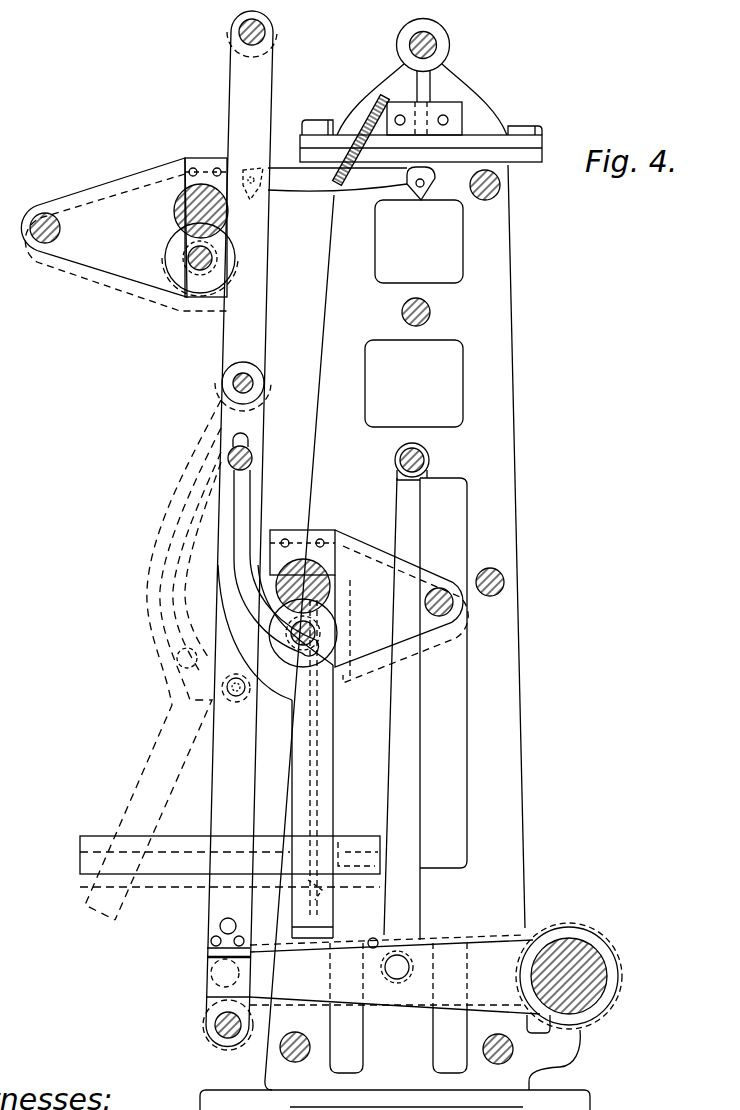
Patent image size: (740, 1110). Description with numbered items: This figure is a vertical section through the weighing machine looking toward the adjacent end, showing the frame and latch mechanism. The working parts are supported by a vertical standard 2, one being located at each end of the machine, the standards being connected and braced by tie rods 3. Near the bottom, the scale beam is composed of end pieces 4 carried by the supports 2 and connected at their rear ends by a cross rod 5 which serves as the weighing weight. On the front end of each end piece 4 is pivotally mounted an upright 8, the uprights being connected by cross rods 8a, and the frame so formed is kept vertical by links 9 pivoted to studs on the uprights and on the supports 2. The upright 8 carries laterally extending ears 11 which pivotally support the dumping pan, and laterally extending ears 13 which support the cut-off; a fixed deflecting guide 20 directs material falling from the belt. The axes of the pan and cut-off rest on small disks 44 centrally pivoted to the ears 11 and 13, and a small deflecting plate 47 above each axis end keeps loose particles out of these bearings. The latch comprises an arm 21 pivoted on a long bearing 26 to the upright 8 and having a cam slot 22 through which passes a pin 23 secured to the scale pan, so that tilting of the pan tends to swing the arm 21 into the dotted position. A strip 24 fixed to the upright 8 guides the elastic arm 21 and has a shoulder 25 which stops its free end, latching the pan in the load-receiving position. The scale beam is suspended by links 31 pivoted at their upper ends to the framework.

The vertical standard 2 is at (495, 405).
The tie rod 3 is at (430, 313).
The scale beam end piece 4 is at (395, 974).
The cross rod 5 is at (603, 972).
The upright 8 is at (238, 530).
The cross rod 8a is at (272, 33).
The link 9 is at (368, 185).
The laterally extending ear 11 is at (366, 562).
The laterally extending ear 13 is at (124, 234).
The fixed deflecting guide 20 is at (367, 117).
The arm 21 is at (255, 493).
The cam slot 22 is at (240, 555).
The pin 23 is at (248, 453).
The strip 24 is at (177, 863).
The shoulder 25 is at (293, 850).
The long bearing 26 is at (243, 380).
The link 31 is at (398, 802).
The disk 44 is at (223, 252).
The deflecting plate 47 is at (193, 163).